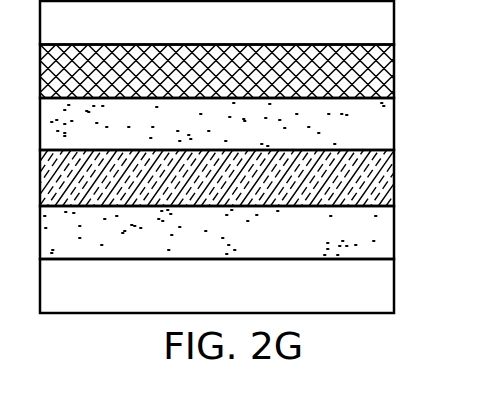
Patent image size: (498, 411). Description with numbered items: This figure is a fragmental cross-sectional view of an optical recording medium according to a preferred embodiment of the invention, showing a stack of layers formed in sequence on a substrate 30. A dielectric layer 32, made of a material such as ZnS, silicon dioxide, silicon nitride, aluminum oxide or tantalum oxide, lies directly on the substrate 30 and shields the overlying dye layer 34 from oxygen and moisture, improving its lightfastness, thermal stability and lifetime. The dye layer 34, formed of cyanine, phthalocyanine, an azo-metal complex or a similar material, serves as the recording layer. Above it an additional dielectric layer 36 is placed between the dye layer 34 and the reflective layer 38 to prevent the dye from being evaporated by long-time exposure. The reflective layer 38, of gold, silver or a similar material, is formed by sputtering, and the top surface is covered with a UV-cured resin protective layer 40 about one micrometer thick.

The substrate 30 is at (347, 288).
The dielectric layer 32 is at (345, 238).
The dye layer 34 is at (345, 181).
The additional dielectric layer 36 is at (347, 129).
The reflective layer 38 is at (365, 79).
The protective layer 40 is at (367, 25).